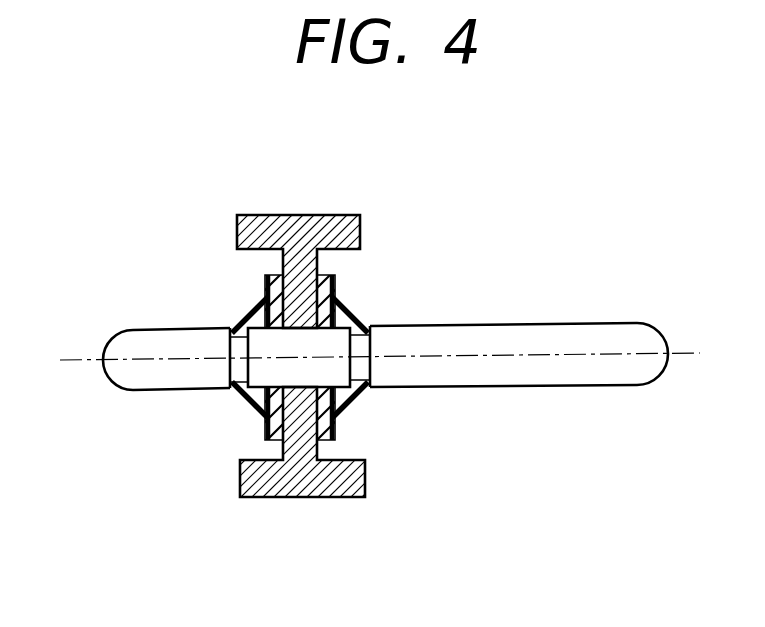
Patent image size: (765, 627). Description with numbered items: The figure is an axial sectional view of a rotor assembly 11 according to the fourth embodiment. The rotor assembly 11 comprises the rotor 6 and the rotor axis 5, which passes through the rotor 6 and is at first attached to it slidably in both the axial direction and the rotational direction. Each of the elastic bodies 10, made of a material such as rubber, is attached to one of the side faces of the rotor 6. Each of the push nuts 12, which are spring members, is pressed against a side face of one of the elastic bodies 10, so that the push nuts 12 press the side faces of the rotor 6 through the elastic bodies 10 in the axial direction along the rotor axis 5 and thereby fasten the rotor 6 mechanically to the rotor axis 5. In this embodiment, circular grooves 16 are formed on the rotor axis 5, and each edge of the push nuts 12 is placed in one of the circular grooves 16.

The rotor axis 5 is at (605, 322).
The rotor 6 is at (350, 217).
The elastic bodies 10 is at (333, 269).
The rotor assembly 11 is at (329, 314).
The push nuts 12 is at (262, 288).
The circular grooves 16 is at (362, 386).